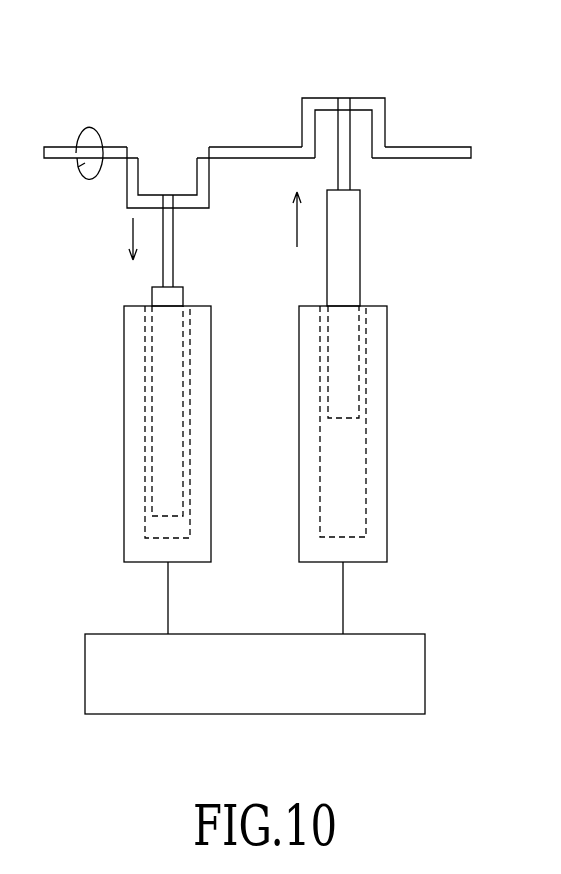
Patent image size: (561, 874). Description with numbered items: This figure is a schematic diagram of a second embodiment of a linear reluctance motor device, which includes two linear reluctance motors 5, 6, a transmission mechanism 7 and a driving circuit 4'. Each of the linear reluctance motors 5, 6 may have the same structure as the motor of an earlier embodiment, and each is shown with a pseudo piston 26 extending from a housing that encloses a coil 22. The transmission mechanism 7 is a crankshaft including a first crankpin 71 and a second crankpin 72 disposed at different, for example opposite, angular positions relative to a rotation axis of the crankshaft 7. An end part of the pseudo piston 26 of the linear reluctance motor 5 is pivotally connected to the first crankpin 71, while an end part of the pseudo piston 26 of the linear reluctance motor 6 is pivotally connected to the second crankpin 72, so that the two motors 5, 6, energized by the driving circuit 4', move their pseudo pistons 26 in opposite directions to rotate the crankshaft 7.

The transmission mechanism 7 is at (65, 147).
The first crankpin 71 is at (153, 195).
The second crankpin 72 is at (363, 98).
The pseudo piston 26 is at (360, 245).
The coil 22 is at (190, 478).
The linear reluctance motor 5 is at (123, 351).
The linear reluctance motor 6 is at (297, 353).
The driving circuit 4' is at (283, 674).